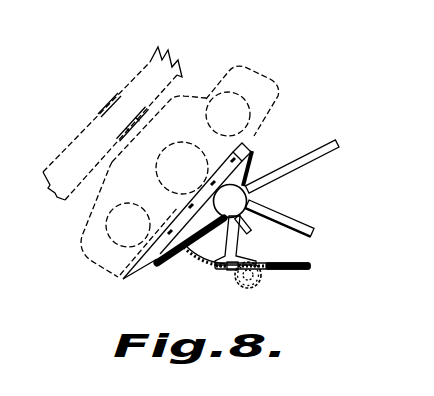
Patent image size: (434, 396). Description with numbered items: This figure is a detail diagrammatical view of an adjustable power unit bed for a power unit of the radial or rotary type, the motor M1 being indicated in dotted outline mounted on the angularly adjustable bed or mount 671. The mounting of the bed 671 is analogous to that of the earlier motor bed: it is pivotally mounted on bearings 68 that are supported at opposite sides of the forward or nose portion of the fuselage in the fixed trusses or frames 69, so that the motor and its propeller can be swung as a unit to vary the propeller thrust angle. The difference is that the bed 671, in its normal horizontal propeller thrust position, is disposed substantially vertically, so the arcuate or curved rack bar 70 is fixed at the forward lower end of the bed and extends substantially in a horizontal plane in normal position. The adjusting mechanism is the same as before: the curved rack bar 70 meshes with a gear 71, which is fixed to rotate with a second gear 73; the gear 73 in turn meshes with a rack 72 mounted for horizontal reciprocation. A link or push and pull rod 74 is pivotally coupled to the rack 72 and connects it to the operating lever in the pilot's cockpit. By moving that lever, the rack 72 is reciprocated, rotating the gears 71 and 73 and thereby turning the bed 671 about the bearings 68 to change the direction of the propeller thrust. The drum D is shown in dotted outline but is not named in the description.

The drum D is at (132, 93).
The motor M1 is at (224, 97).
The angularly adjustable bed or mount 671 is at (185, 224).
The bearings 68 is at (229, 192).
The fixed trusses or frames 69 is at (284, 221).
The arcuate or curved rack bar 70 is at (198, 255).
The gear 71 is at (257, 287).
The rack 72 is at (222, 272).
The gear 73 is at (263, 275).
The link or push and pull rod 74 is at (303, 263).